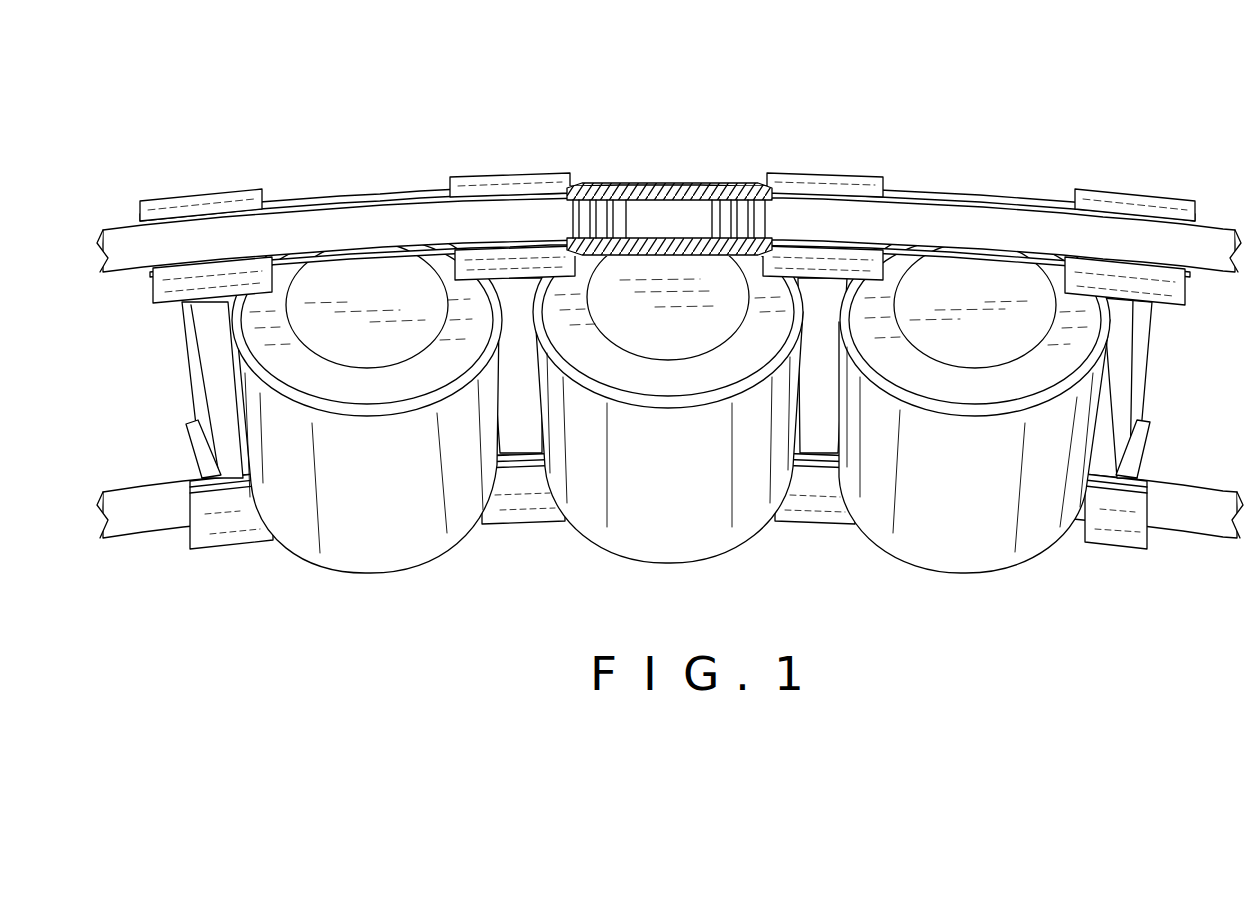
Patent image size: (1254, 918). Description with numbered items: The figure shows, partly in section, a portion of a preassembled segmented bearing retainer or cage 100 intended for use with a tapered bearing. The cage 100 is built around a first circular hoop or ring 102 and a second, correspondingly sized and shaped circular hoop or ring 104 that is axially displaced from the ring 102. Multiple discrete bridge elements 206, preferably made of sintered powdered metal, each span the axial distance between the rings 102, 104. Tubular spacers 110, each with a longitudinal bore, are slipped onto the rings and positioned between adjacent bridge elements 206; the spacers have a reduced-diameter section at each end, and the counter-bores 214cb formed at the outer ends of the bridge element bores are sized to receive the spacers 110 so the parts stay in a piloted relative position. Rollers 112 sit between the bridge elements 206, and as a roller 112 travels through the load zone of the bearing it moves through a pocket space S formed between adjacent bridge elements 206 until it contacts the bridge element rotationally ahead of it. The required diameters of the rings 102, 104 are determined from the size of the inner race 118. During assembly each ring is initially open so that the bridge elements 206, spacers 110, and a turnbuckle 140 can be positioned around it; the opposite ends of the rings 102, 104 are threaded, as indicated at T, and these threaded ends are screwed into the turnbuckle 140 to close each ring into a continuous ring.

The segmented bearing retainer or cage 100 is at (670, 314).
The first circular hoop or ring 102 is at (1017, 207).
The second circular hoop or ring 104 is at (1175, 530).
The tubular spacer 110 is at (344, 193).
The roller 112 is at (407, 493).
The inner race 118 is at (1195, 407).
The turnbuckle 140 is at (669, 175).
The bridge element 206 is at (668, 202).
The counter-bore 214cb is at (262, 203).
The pocket space S is at (244, 431).
The threaded ends T is at (588, 190).